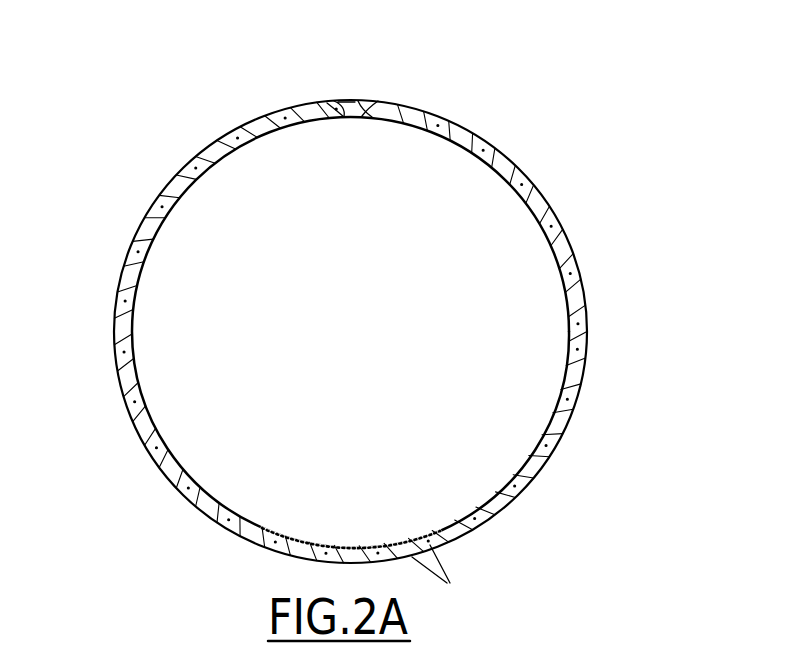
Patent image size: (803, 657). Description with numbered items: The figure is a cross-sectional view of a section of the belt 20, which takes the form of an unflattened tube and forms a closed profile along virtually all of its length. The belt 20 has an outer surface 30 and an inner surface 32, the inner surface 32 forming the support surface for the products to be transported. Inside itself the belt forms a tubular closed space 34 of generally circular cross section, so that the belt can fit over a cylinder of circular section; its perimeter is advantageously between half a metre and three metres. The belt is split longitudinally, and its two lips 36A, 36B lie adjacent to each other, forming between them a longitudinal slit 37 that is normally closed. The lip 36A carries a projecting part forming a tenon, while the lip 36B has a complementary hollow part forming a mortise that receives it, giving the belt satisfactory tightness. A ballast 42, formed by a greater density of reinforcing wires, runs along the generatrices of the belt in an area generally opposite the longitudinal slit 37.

The belt 20 is at (596, 320).
The outer surface 30 is at (563, 237).
The inner surface 32 is at (557, 262).
The tubular closed space 34 is at (183, 337).
The lip 36A is at (329, 104).
The lip 36B is at (378, 101).
The longitudinal slit 37 is at (352, 98).
The ballast 42 is at (443, 580).